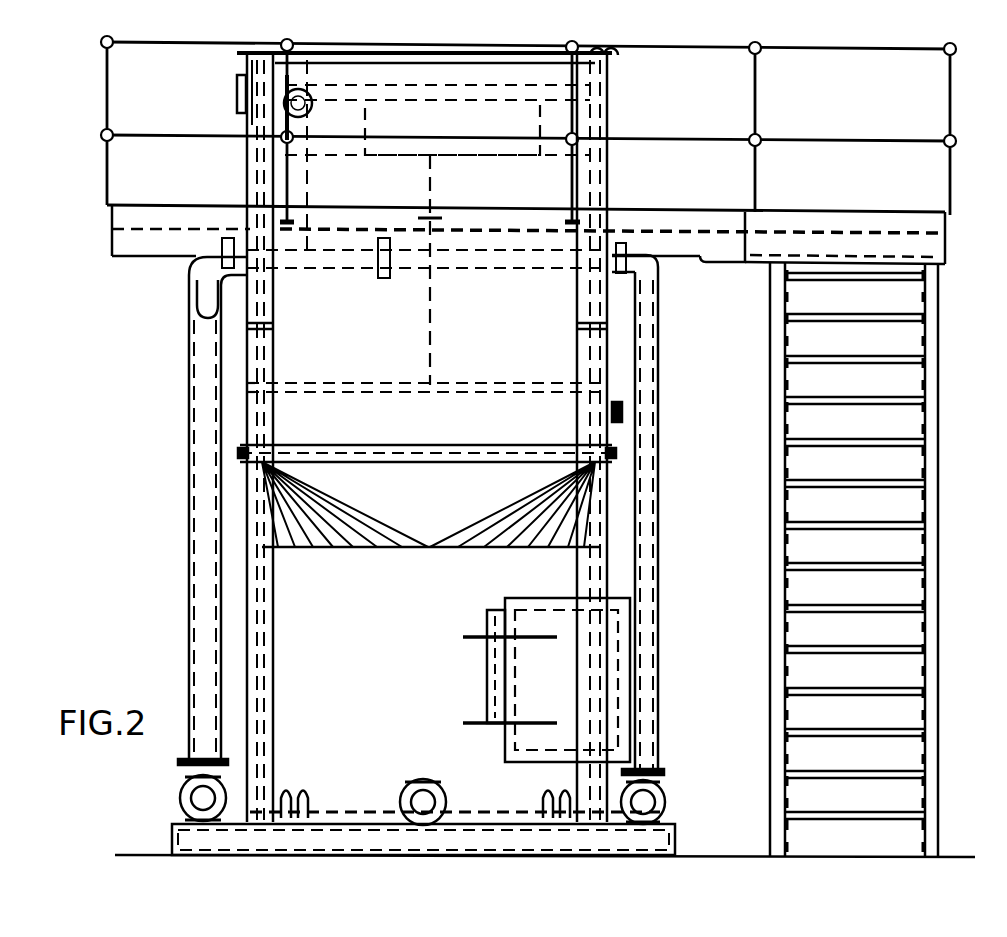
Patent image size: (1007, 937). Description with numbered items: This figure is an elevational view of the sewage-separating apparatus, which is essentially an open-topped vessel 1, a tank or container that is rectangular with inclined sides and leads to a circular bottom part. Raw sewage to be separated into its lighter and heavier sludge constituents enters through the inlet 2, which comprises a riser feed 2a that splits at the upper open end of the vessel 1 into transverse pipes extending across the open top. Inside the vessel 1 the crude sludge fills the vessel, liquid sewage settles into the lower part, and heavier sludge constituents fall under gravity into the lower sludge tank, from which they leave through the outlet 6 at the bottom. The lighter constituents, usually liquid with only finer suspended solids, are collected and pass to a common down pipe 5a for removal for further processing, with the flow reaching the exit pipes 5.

The vessel 1 is at (170, 455).
The inlet 2 is at (667, 803).
The riser feed 2a is at (650, 505).
The exit pipes 5 is at (195, 262).
The down pipe 5a is at (210, 588).
The outlet 6 is at (414, 788).